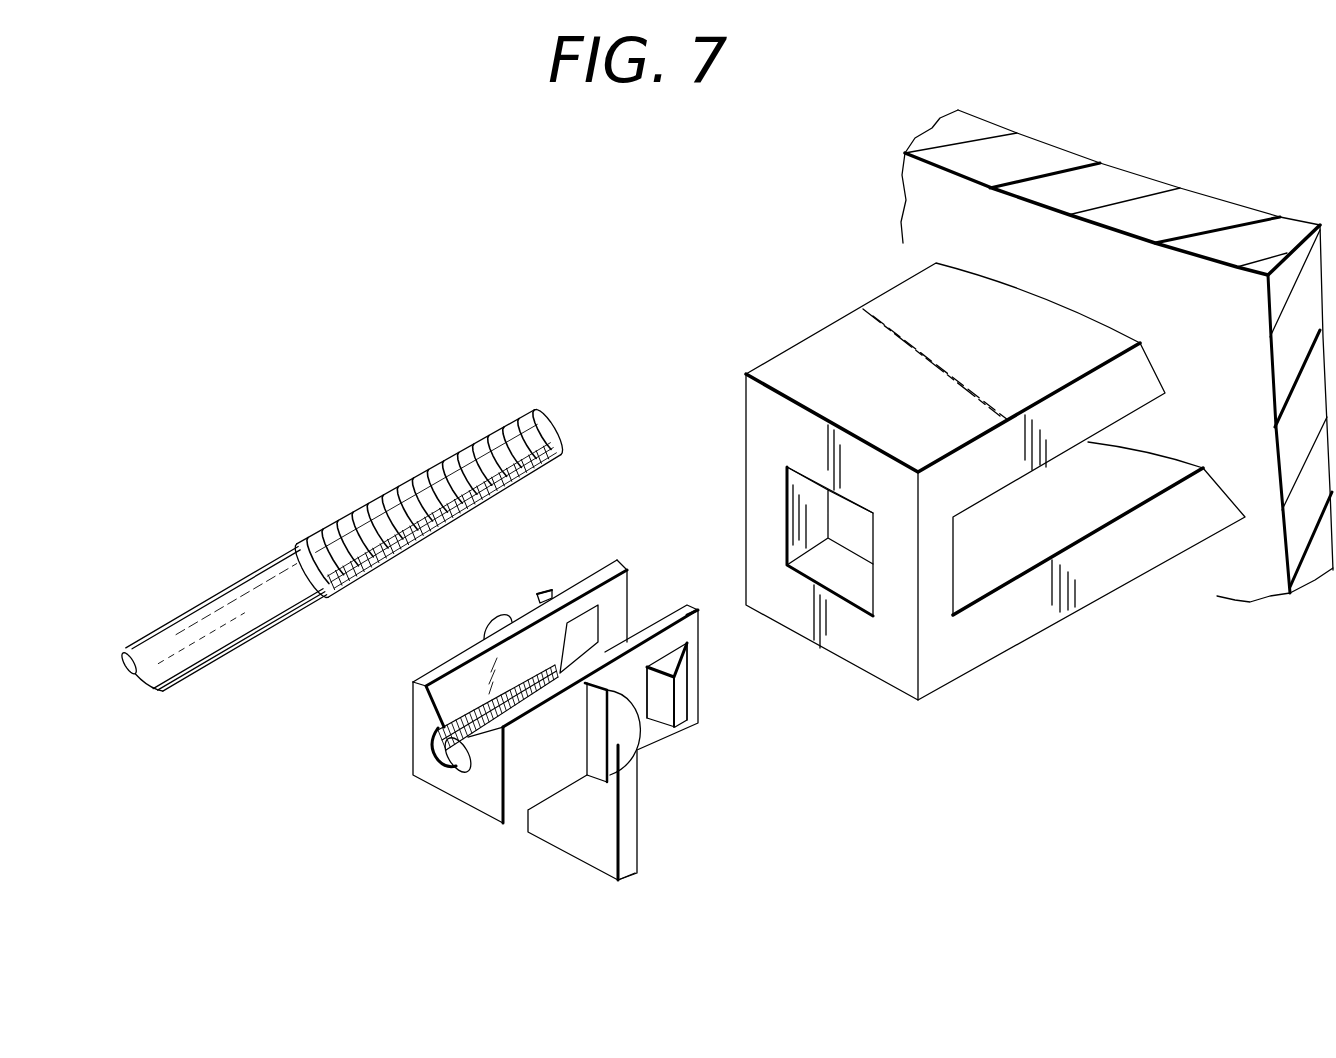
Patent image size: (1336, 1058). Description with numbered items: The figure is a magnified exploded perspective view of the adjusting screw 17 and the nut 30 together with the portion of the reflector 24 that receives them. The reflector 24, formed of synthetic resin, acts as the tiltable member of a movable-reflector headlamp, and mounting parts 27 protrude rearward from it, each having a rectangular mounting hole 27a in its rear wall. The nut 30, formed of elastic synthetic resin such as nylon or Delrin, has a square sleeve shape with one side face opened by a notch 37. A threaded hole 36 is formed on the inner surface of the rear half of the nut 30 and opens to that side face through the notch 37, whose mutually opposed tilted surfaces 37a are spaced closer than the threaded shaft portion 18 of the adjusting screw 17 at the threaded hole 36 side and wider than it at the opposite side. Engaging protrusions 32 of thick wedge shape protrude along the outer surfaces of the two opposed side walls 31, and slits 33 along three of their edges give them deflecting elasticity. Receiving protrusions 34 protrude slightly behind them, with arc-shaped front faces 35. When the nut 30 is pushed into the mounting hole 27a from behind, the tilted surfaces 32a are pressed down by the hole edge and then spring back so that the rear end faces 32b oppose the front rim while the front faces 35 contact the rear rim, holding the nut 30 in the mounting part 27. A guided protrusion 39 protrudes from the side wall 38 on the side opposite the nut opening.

The adjusting screw 17 is at (240, 577).
The threaded shaft portion 18 is at (395, 500).
The reflector 24 is at (925, 200).
The mounting parts 27 is at (995, 507).
The mounting holes 27a is at (846, 570).
The nut 30 is at (554, 694).
The side walls 31 is at (620, 562).
The engaging protrusions 32 is at (549, 592).
The tilted surfaces 32a is at (690, 712).
The rear end faces 32b is at (662, 700).
The slits 33 is at (590, 625).
The receiving protrusions 34 is at (483, 622).
The front faces 35 is at (503, 613).
The threaded hole 36 is at (455, 765).
The notch 37 is at (440, 752).
The tilted surfaces of the notch 37a is at (455, 692).
The side wall 38 is at (457, 790).
The guided protrusion 39 is at (570, 835).